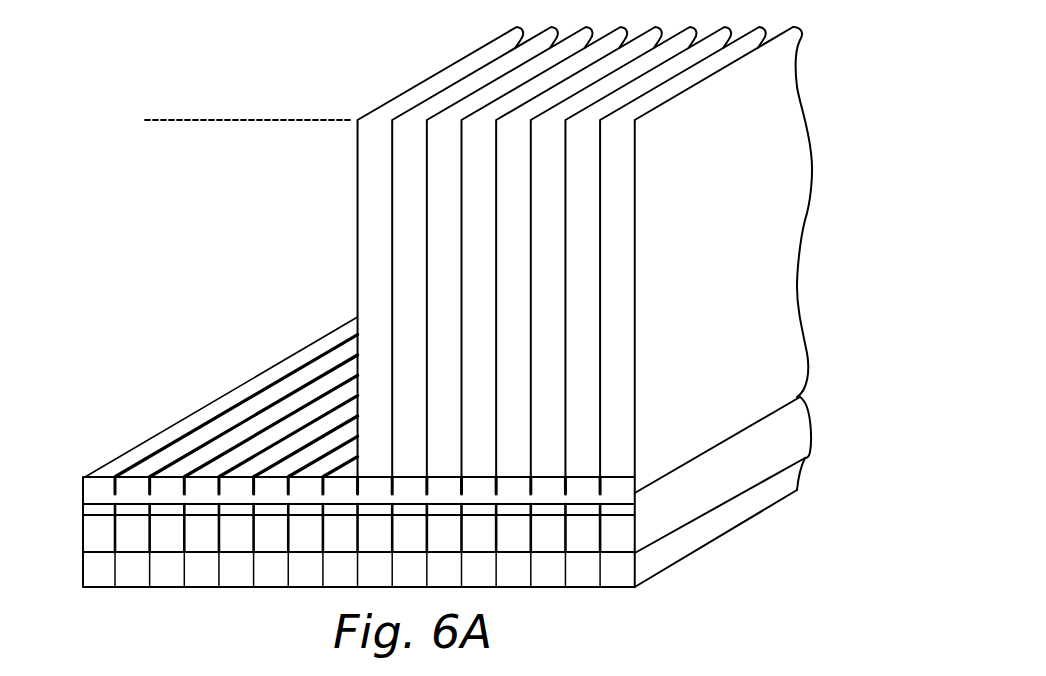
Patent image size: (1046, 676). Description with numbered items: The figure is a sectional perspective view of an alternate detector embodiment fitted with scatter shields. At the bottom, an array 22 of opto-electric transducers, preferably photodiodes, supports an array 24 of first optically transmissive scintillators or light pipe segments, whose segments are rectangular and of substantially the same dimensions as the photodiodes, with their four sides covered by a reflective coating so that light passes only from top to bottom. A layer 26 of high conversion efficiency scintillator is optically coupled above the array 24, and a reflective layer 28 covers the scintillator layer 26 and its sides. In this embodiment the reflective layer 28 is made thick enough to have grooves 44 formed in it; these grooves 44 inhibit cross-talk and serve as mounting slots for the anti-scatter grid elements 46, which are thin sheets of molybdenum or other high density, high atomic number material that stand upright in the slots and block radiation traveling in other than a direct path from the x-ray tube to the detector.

The array of opto-electric transducers 22 is at (622, 573).
The array of first optically transmissive scintillators 24 is at (622, 535).
The layer of high conversion efficiency scintillator 26 is at (627, 512).
The reflective layer 28 is at (87, 488).
The grooves 44 is at (295, 430).
The anti-scatter grid elements 46 is at (724, 250).